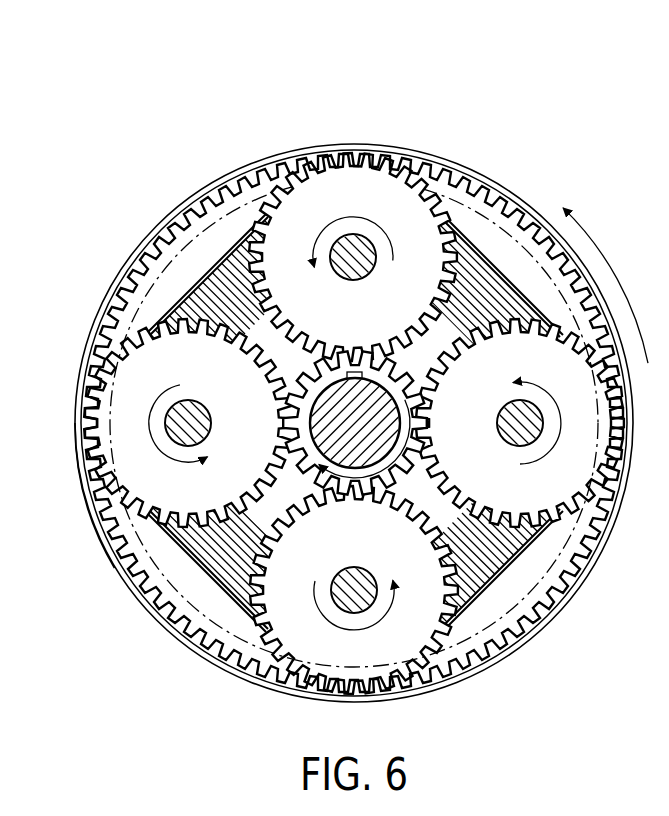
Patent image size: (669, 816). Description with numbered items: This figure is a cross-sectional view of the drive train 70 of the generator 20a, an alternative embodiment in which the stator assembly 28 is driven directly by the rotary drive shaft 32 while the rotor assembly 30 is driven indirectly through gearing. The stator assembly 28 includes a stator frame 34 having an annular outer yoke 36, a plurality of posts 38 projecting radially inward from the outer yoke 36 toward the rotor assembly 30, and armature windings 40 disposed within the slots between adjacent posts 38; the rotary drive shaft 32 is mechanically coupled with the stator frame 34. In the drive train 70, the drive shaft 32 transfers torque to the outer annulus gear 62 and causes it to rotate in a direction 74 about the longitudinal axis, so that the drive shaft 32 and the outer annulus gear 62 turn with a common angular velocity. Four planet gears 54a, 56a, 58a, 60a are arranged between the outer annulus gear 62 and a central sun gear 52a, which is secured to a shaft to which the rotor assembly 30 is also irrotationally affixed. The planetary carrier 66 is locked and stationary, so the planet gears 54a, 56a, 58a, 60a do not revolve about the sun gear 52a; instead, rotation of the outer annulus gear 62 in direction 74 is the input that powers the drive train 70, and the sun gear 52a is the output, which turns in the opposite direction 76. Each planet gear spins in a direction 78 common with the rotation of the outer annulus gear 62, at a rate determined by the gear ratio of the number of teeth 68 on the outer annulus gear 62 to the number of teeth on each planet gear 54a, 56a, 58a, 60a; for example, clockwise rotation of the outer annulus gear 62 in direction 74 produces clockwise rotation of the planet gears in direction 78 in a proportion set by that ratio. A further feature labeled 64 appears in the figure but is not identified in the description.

The generator 20a is at (122, 96).
The stator assembly 28 is at (332, 421).
The rotor assembly 30 is at (207, 245).
The rotary drive shaft 32 is at (312, 410).
The stator frame 34 is at (478, 240).
The annular outer yoke 36 is at (160, 322).
The posts 38 is at (514, 514).
The armature windings 40 is at (215, 545).
The sun gear 52a is at (343, 428).
The planet gear 54a is at (333, 216).
The planet gear 56a is at (165, 373).
The planet gear 58a is at (381, 658).
The planet gear 60a is at (461, 386).
The outer annulus gear 62 is at (82, 374).
The keyway 64 is at (355, 372).
The planetary carrier 66 is at (447, 197).
The teeth 68 is at (104, 548).
The drive train 70 is at (145, 245).
The direction 74 is at (599, 247).
The opposite direction 76 is at (355, 478).
The direction 78 is at (389, 238).